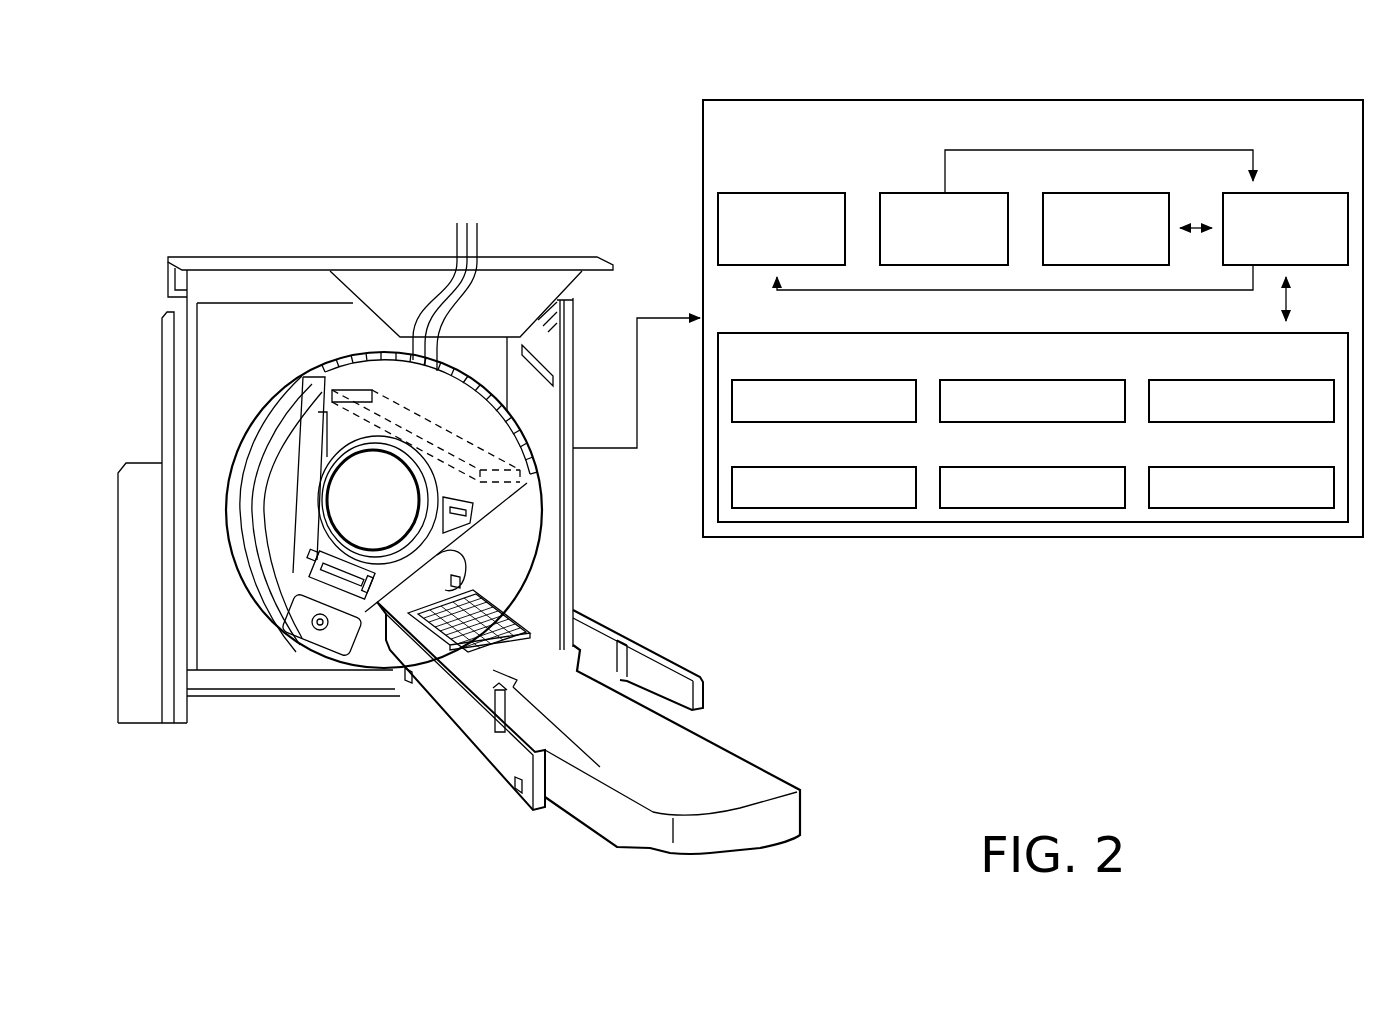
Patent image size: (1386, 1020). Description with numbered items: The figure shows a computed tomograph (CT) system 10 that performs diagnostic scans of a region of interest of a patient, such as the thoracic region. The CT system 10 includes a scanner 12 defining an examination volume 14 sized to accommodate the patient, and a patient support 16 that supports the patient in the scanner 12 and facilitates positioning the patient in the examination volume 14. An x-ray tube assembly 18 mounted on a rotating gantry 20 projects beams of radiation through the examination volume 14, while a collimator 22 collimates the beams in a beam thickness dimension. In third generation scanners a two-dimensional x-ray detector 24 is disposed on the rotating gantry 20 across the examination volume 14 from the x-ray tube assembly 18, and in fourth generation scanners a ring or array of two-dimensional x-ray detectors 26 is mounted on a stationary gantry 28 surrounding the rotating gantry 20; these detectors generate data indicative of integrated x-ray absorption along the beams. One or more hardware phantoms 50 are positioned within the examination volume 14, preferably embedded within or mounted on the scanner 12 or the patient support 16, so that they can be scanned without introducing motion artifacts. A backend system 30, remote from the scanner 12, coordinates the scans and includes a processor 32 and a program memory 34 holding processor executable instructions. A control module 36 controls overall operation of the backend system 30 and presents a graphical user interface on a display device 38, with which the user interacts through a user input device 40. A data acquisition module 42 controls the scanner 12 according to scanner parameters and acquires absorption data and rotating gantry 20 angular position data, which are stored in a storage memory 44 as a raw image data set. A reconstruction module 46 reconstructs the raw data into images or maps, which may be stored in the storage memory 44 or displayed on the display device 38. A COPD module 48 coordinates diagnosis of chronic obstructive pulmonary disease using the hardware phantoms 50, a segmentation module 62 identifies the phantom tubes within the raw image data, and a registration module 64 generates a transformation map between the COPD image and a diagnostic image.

The computed tomograph (CT) system 10 is at (392, 134).
The scanner 12 is at (262, 763).
The examination volume 14 is at (388, 518).
The patient support 16 is at (755, 787).
The x-ray tube assembly 18 is at (316, 633).
The rotating gantry 20 is at (493, 497).
The collimator 22 is at (327, 573).
The two-dimensional x-ray detector 24 is at (352, 392).
The ring or array of two-dimensional x-ray detectors 26 is at (446, 284).
The stationary gantry 28 is at (265, 406).
The backend system 30 is at (1040, 100).
The processor 32 is at (1293, 193).
The program memory 34 is at (1040, 333).
The control module 36 is at (793, 422).
The display device 38 is at (808, 193).
The user input device 40 is at (968, 193).
The data acquisition module 42 is at (1003, 422).
The storage memory 44 is at (1133, 193).
The reconstruction module 46 is at (1212, 422).
The chronic obstructive pulmonary disease (COPD) module 48 is at (855, 467).
The hardware phantom 50 is at (463, 650).
The segmentation module 62 is at (1065, 467).
The registration module 64 is at (1273, 467).